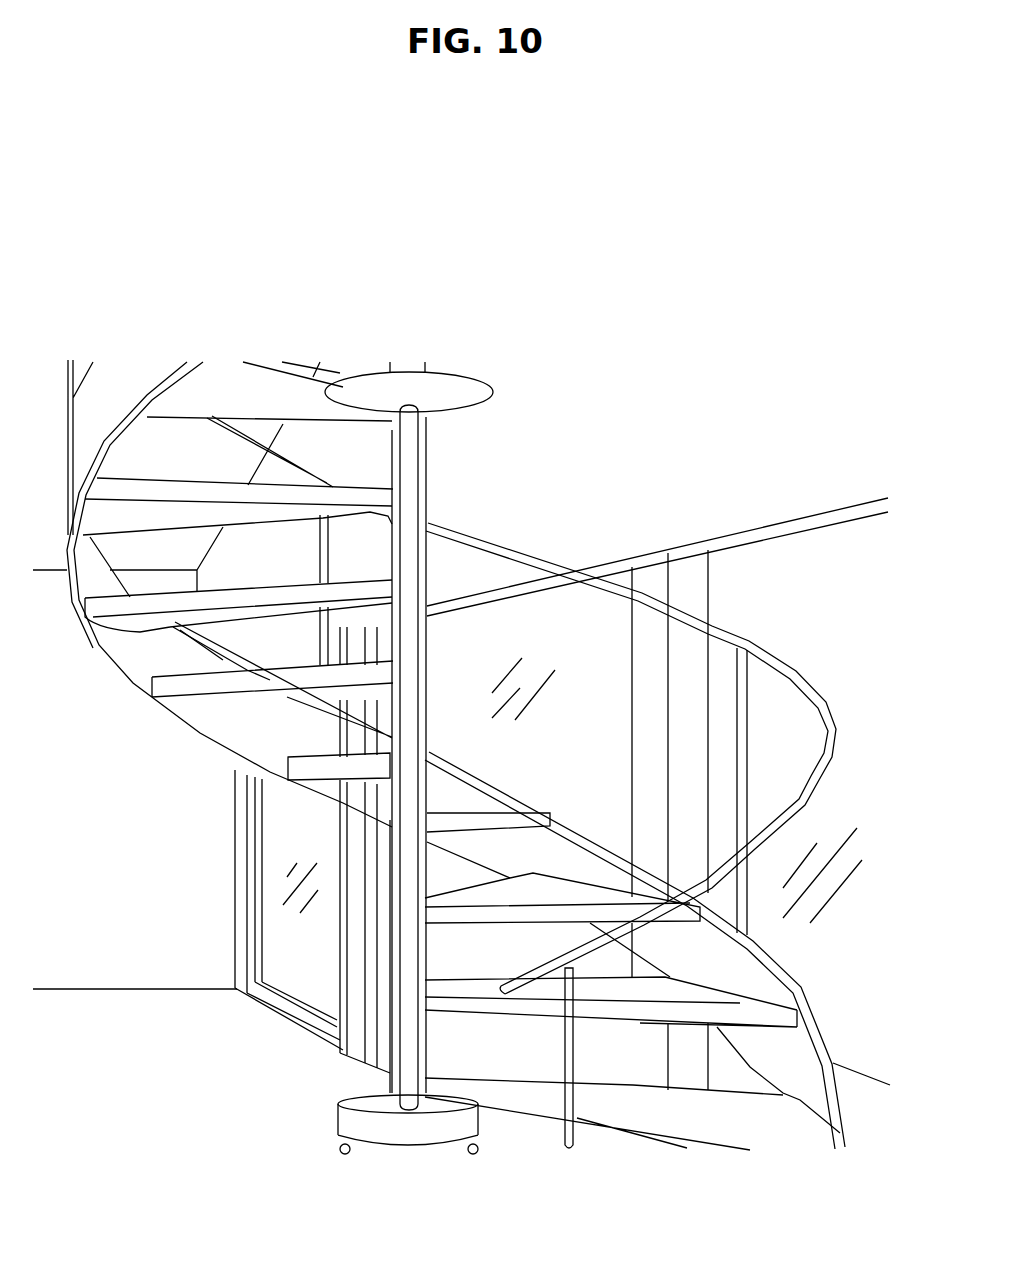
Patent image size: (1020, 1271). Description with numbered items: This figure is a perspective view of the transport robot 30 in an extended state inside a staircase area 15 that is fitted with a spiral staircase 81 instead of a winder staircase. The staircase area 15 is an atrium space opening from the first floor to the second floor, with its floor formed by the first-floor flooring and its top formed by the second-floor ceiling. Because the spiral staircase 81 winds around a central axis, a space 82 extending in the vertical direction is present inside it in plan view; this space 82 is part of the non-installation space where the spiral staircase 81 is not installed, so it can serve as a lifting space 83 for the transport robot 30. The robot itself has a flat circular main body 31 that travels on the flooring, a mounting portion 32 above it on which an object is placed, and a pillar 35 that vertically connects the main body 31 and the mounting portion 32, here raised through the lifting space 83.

The staircase area 15 is at (81, 870).
The transport robot 30 is at (407, 1080).
The main body 31 is at (350, 1127).
The mounting portion 32 is at (453, 397).
The pillar 35 is at (412, 652).
The spiral staircase 81 is at (205, 717).
The space 82 is at (383, 937).
The lifting space 83 is at (200, 962).